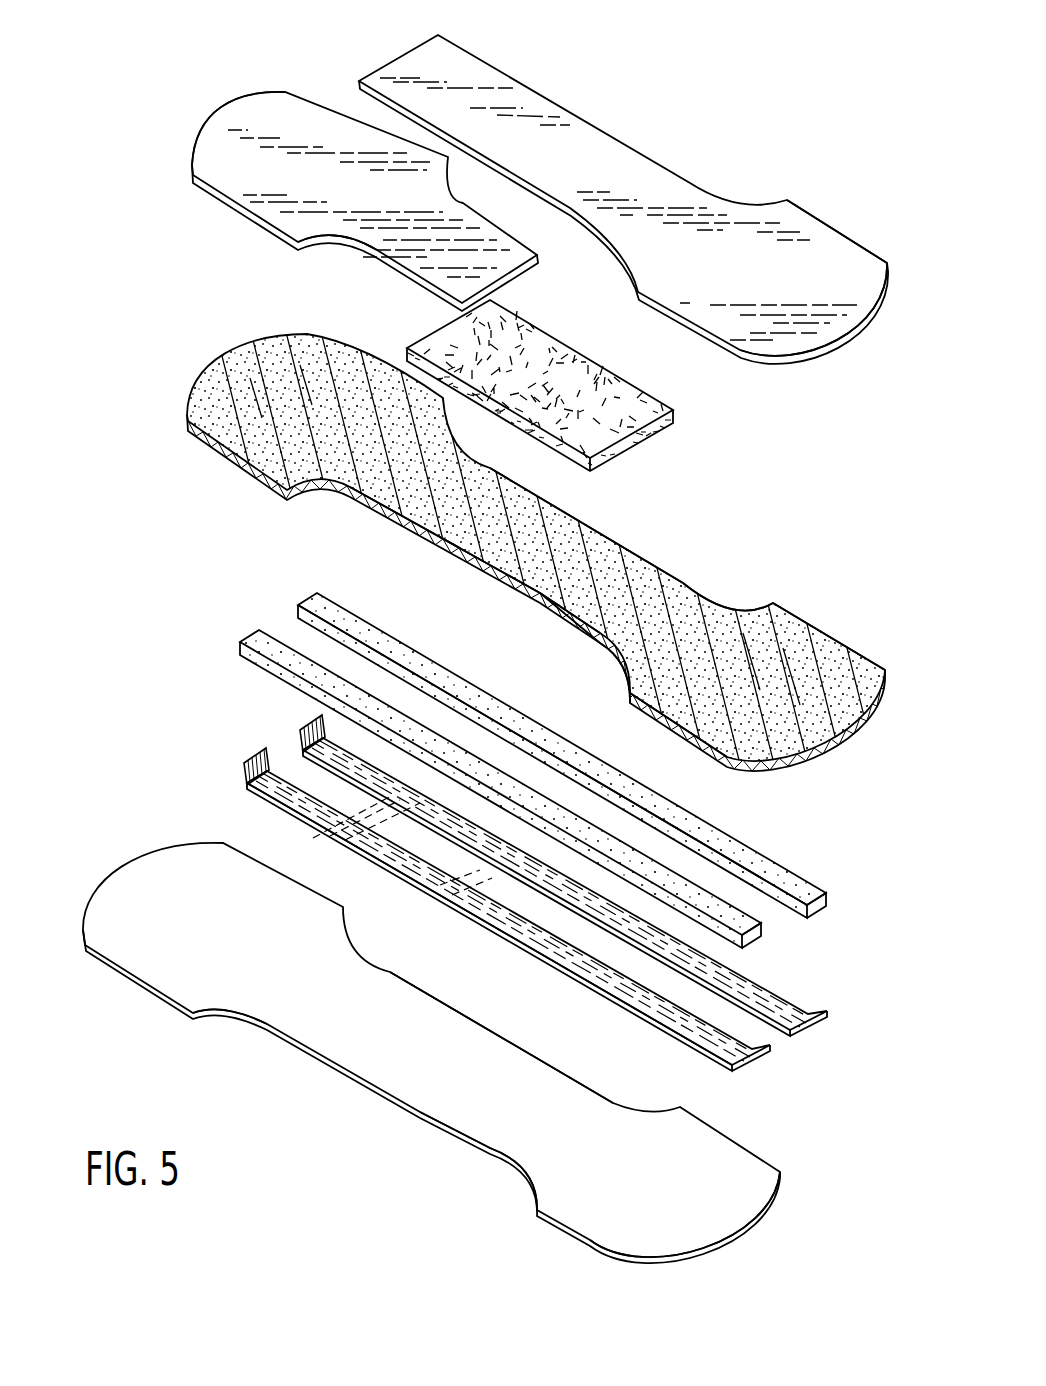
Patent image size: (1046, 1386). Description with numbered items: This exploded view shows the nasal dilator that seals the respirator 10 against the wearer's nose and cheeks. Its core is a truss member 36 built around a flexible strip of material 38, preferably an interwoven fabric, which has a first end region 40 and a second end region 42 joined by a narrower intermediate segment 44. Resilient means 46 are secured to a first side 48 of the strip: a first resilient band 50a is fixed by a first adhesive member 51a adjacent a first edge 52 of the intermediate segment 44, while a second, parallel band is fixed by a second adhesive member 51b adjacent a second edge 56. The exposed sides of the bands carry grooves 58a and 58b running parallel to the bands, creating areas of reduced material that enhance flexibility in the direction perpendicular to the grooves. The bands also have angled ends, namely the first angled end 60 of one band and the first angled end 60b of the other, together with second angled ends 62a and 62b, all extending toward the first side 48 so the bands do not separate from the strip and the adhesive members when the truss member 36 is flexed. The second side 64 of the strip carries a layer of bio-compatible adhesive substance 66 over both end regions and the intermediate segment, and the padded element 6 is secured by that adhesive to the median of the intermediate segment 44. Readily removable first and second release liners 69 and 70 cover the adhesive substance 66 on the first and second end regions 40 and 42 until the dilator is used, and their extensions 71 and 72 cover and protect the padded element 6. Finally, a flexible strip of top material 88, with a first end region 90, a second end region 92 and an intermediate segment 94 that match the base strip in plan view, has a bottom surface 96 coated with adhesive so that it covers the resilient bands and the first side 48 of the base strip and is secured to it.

The bandage 10 is at (236, 102).
The first release liner 69 is at (299, 132).
The extension 72 is at (488, 87).
The second release liner 70 is at (773, 262).
The extension 71 is at (395, 252).
The adhesive substance 66 is at (300, 365).
The first end region 40 is at (220, 376).
The absorbent pad 6 is at (647, 390).
The truss member 36 is at (797, 503).
The first edge 52 is at (553, 503).
The flexible strip of material 38 is at (607, 538).
The second edge 56 is at (412, 522).
The first side 48 is at (473, 570).
The second side 64 is at (703, 603).
The intermediate segment 44 is at (540, 616).
The second end region 42 is at (787, 727).
The first resilient band 50a is at (295, 744).
The resilient means 46 is at (278, 715).
The second angled end 62b is at (243, 757).
The second angled end 62a is at (247, 772).
The first end region 90 is at (196, 895).
The grooves 58b is at (342, 819).
The grooves 58a is at (454, 891).
The second adhesive member 51b is at (787, 875).
The first adhesive member 51a is at (768, 925).
The intermediate segment 94 is at (400, 973).
The bottom surface 96 is at (343, 1017).
The first angled end 60b is at (790, 1033).
The carrier strip 60 is at (733, 1068).
The flexible strip of top material 88 is at (478, 1108).
The second end region 92 is at (782, 1173).